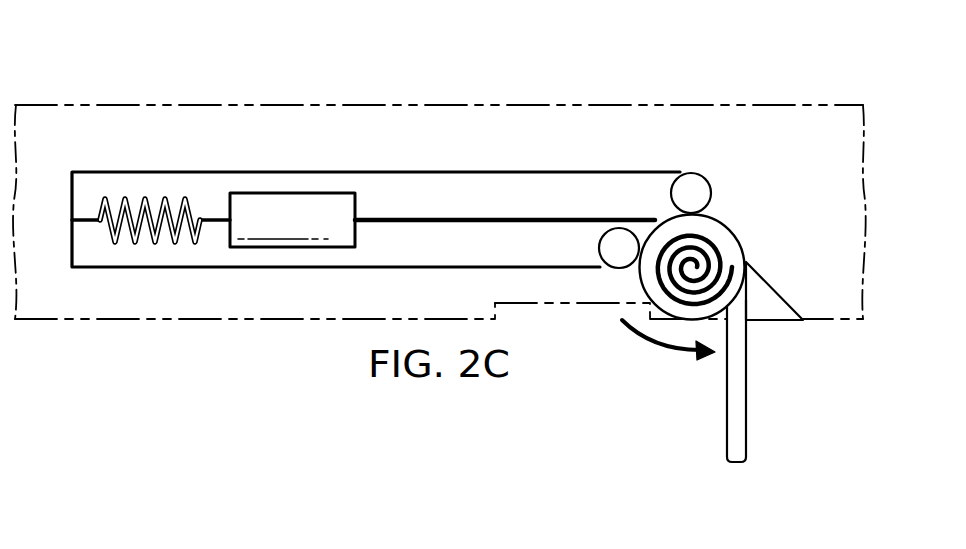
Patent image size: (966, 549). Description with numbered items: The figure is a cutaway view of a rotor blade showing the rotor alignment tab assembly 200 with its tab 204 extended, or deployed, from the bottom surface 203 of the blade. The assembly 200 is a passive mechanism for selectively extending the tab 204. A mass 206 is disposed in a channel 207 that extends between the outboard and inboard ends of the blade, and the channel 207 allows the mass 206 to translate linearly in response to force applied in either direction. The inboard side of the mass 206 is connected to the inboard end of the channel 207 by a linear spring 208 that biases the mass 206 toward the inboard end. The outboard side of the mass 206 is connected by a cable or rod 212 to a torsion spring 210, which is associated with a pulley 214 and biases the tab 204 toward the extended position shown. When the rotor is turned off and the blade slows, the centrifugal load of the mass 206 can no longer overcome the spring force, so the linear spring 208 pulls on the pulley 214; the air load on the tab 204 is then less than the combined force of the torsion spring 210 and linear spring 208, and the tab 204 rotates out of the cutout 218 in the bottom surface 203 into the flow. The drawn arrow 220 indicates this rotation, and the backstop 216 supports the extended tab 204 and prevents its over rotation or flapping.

The rotor alignment tab assembly 200 is at (211, 93).
The bottom surface 203 is at (118, 321).
The tab 204 is at (747, 395).
The mass 206 is at (298, 207).
The channel 207 is at (222, 180).
The linear spring 208 is at (127, 202).
The torsion spring 210 is at (733, 252).
The cable (or rod) 212 is at (435, 218).
The pulley 214 is at (752, 205).
The backstop 216 is at (788, 300).
The cutout 218 is at (565, 313).
The rotation direction arrow 220 is at (655, 348).